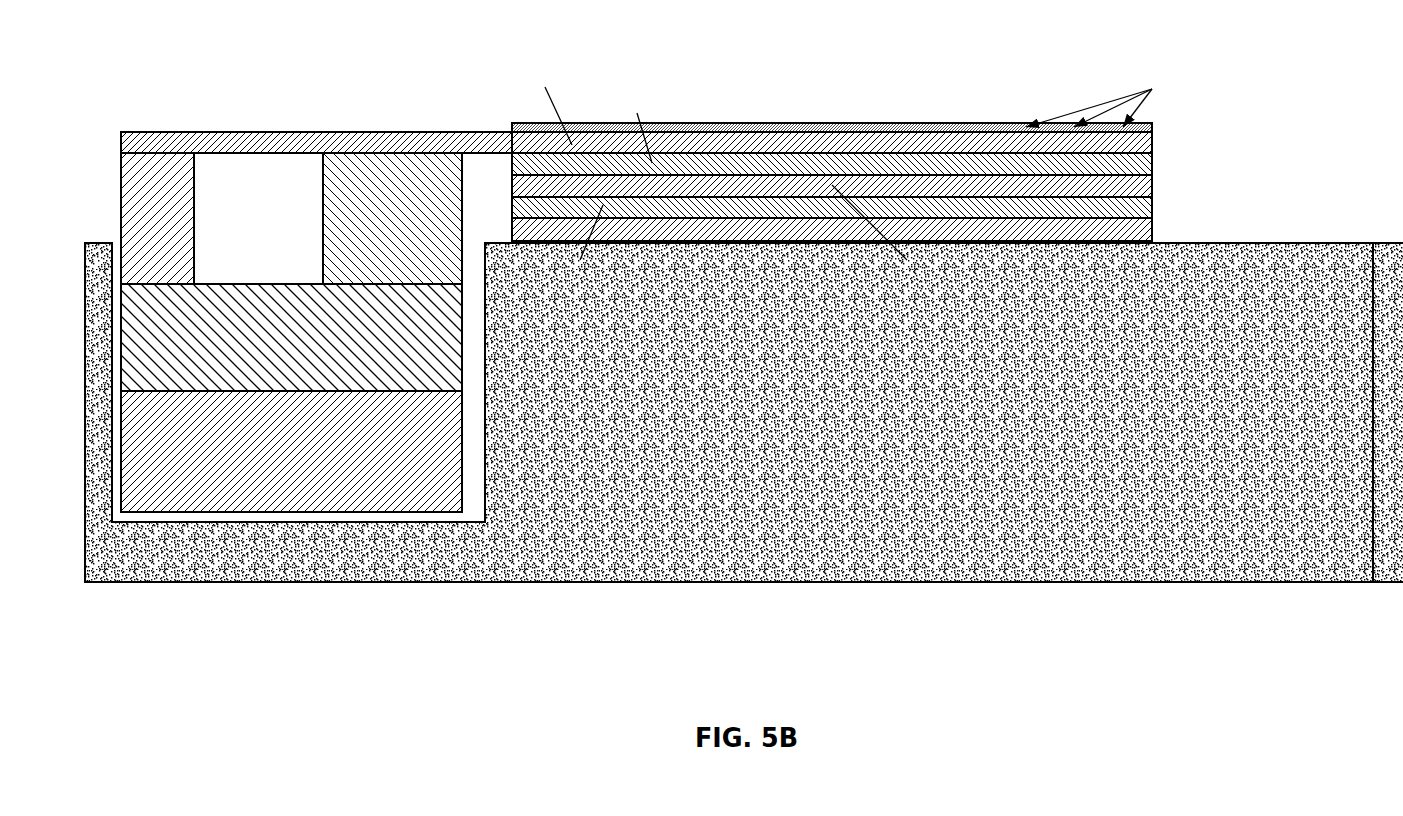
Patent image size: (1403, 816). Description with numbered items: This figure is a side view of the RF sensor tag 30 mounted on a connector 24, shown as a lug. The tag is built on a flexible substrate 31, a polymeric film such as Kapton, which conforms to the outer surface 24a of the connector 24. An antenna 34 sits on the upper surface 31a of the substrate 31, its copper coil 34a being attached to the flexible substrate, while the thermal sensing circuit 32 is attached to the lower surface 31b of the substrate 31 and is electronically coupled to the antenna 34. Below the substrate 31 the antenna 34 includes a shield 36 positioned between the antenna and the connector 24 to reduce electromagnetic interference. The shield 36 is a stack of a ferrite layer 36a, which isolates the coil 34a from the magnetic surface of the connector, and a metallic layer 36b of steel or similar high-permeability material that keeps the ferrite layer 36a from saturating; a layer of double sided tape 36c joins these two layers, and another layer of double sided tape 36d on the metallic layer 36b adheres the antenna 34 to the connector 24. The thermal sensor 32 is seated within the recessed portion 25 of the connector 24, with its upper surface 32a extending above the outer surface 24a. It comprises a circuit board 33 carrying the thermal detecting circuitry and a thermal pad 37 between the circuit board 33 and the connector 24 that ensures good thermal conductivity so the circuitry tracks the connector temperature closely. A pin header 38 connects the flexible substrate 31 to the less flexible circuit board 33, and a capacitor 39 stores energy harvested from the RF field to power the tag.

The connector 24 is at (140, 583).
The outer surface of the connector 24a is at (1333, 243).
The recessed portion 25 is at (113, 250).
The RF sensor tag 30 is at (896, 29).
The substrate 31 is at (393, 131).
The upper surface of the substrate 31a is at (847, 125).
The lower surface of the substrate 31b is at (275, 155).
The thermal sensing circuit 32 is at (105, 156).
The upper surface of the thermal sensor 32a is at (192, 130).
The circuit board 33 is at (305, 372).
The antenna 34 is at (923, 95).
The copper coil 34a is at (683, 123).
The shield 36 is at (1263, 171).
The ferrite layer 36a is at (1153, 160).
The metallic material layer 36b is at (1153, 207).
The double sided tape layer 36c is at (1153, 182).
The double sided tape layer 36d is at (1153, 230).
The thermal pad 37 is at (305, 496).
The pin header 38 is at (195, 240).
The capacitor 39 is at (322, 270).